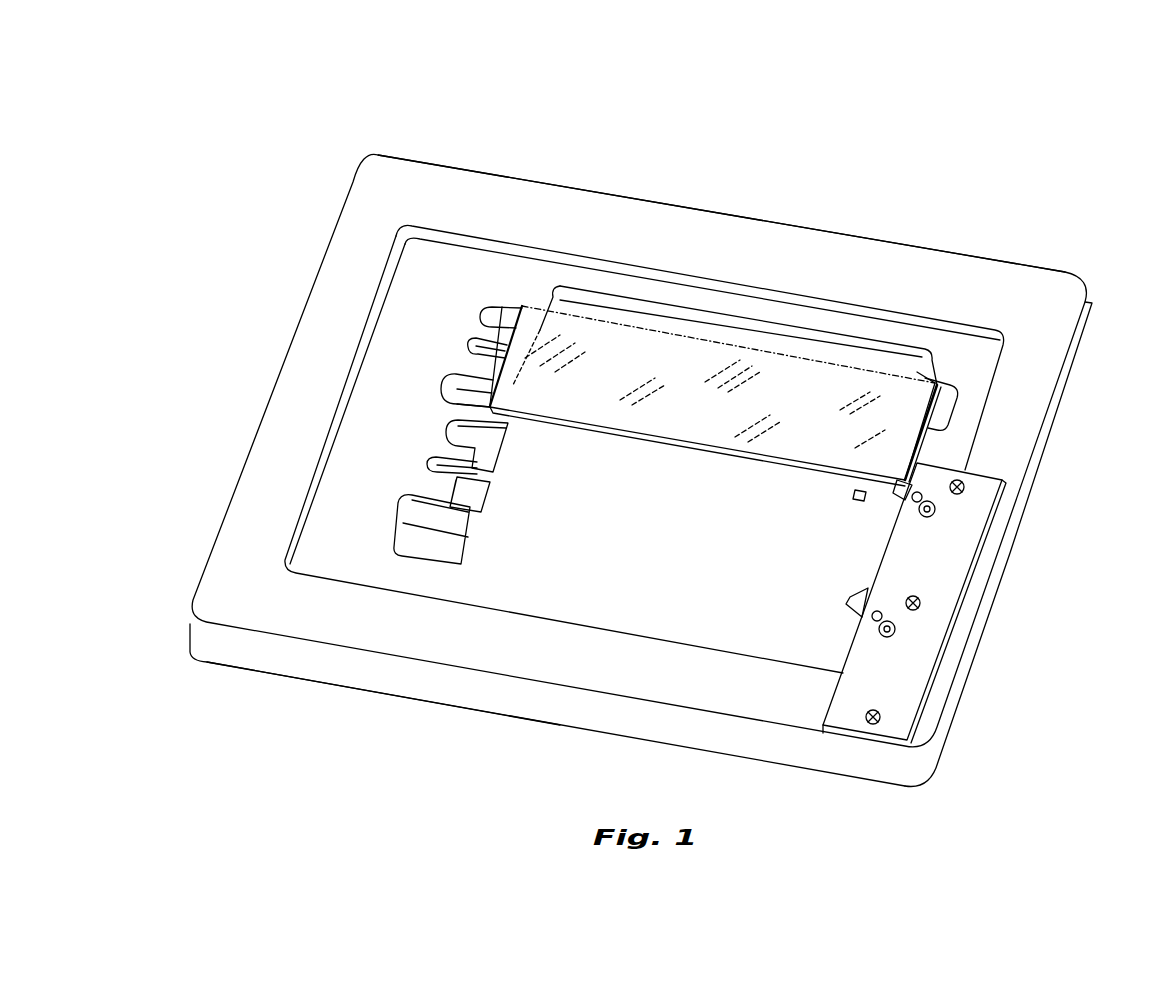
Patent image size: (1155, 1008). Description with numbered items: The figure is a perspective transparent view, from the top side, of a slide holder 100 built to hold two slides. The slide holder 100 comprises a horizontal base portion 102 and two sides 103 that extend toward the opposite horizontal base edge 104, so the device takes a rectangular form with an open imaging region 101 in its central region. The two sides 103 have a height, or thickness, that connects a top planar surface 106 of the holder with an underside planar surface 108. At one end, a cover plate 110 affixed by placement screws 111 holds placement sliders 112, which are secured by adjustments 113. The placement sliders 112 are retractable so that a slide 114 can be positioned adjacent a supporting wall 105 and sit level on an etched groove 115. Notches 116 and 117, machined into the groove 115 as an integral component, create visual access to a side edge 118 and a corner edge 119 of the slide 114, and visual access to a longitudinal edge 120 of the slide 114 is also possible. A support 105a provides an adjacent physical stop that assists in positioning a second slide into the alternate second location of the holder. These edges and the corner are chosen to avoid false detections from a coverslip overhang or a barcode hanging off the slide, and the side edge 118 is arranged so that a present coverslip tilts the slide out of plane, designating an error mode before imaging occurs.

The slide holder 100 is at (642, 430).
The open imaging region 101 is at (603, 562).
The horizontal base portion 102 is at (407, 682).
The sides 103 is at (1037, 477).
The horizontal base edge 104 is at (905, 248).
The supporting wall 105 is at (858, 497).
The support 105a is at (917, 372).
The top planar surface 106 is at (1045, 380).
The underside planar surface 108 is at (222, 665).
The cover plate 110 is at (962, 558).
The placement screws 111 is at (921, 603).
The placement sliders 112 is at (862, 598).
The adjustments 113 is at (898, 630).
The slide 114 is at (680, 432).
The etched groove 115 is at (402, 540).
The notch 116 is at (472, 346).
The notch 117 is at (445, 385).
The side edge 118 is at (502, 307).
The corner edge 119 is at (447, 398).
The longitudinal edge 120 is at (607, 430).